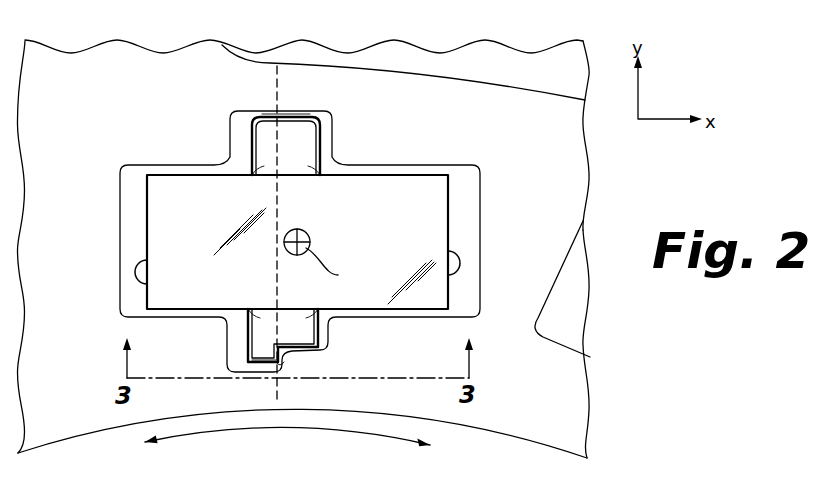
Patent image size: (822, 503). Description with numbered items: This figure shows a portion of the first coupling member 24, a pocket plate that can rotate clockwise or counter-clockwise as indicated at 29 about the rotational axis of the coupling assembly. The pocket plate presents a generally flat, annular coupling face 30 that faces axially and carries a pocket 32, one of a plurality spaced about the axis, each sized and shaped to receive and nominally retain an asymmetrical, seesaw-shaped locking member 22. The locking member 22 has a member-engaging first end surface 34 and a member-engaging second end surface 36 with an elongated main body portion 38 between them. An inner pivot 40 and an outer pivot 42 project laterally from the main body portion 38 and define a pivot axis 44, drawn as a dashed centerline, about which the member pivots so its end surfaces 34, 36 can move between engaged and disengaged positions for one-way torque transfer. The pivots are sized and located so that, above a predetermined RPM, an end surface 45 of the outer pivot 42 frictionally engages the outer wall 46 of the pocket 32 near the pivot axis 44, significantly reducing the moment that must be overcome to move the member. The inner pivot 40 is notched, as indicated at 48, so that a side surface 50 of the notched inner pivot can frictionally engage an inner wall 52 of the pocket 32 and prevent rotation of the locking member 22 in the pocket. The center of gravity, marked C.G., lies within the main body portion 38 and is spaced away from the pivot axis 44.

The locking member 22 is at (316, 246).
The first coupling member 24 is at (545, 382).
The rotation direction indication 29 is at (277, 430).
The coupling face 30 is at (557, 190).
The pocket 32 is at (462, 192).
The first end surface 34 is at (145, 262).
The second end surface 36 is at (448, 255).
The main body portion 38 is at (343, 167).
The inner pivot 40 is at (260, 333).
The outer pivot 42 is at (298, 138).
The pivot axis 44 is at (278, 385).
The end surface of outer pivot 45 is at (296, 114).
The outer wall 46 is at (270, 110).
The notch 48 is at (292, 356).
The side surface 50 is at (292, 343).
The inner wall 52 is at (273, 360).